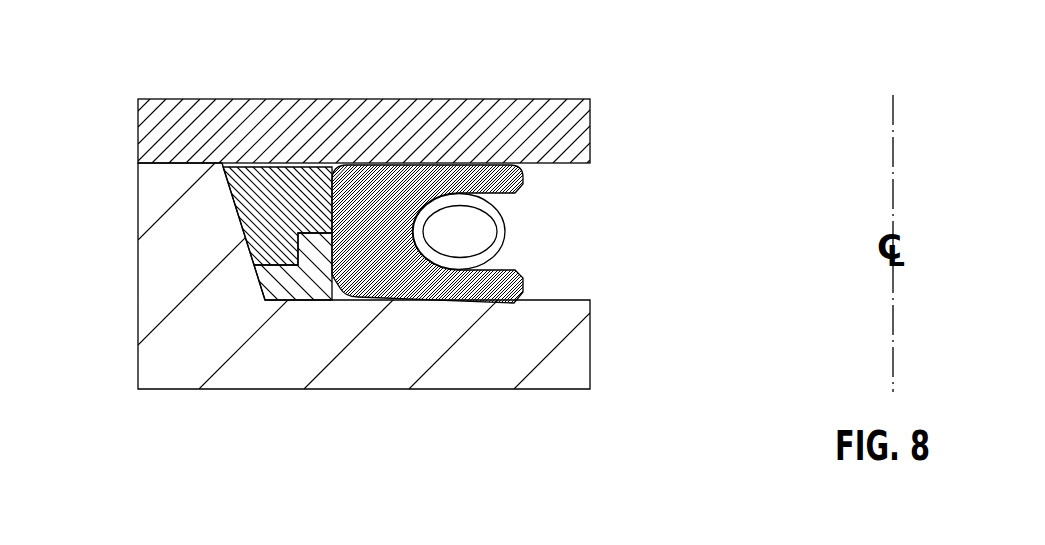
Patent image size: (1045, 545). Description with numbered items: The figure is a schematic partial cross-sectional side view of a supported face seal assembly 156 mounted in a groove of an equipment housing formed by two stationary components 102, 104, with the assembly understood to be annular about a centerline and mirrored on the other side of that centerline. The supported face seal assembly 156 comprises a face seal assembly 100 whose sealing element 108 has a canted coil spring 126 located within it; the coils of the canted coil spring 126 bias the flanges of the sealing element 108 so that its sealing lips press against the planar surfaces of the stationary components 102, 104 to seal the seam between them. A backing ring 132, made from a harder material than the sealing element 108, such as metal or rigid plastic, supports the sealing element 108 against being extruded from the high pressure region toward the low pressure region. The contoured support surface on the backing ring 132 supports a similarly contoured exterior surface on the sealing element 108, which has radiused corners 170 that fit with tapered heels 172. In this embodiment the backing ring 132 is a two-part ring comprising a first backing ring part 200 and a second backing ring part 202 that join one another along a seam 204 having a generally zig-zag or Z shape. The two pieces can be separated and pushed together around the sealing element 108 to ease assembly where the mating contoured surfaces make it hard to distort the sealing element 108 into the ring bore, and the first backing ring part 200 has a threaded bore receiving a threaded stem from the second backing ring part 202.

The face seal assembly 100 is at (548, 273).
The stationary component 102 is at (565, 122).
The stationary component 104 is at (567, 365).
The sealing element 108 is at (456, 174).
The canted coil spring 126 is at (513, 233).
The backing ring 132 is at (258, 283).
The supported face seal assembly 156 is at (566, 199).
The radiused corners 170 is at (333, 178).
The tapered heels 172 is at (358, 167).
The first backing ring part 200 is at (267, 178).
The second backing ring part 202 is at (287, 287).
The seam 204 is at (252, 263).